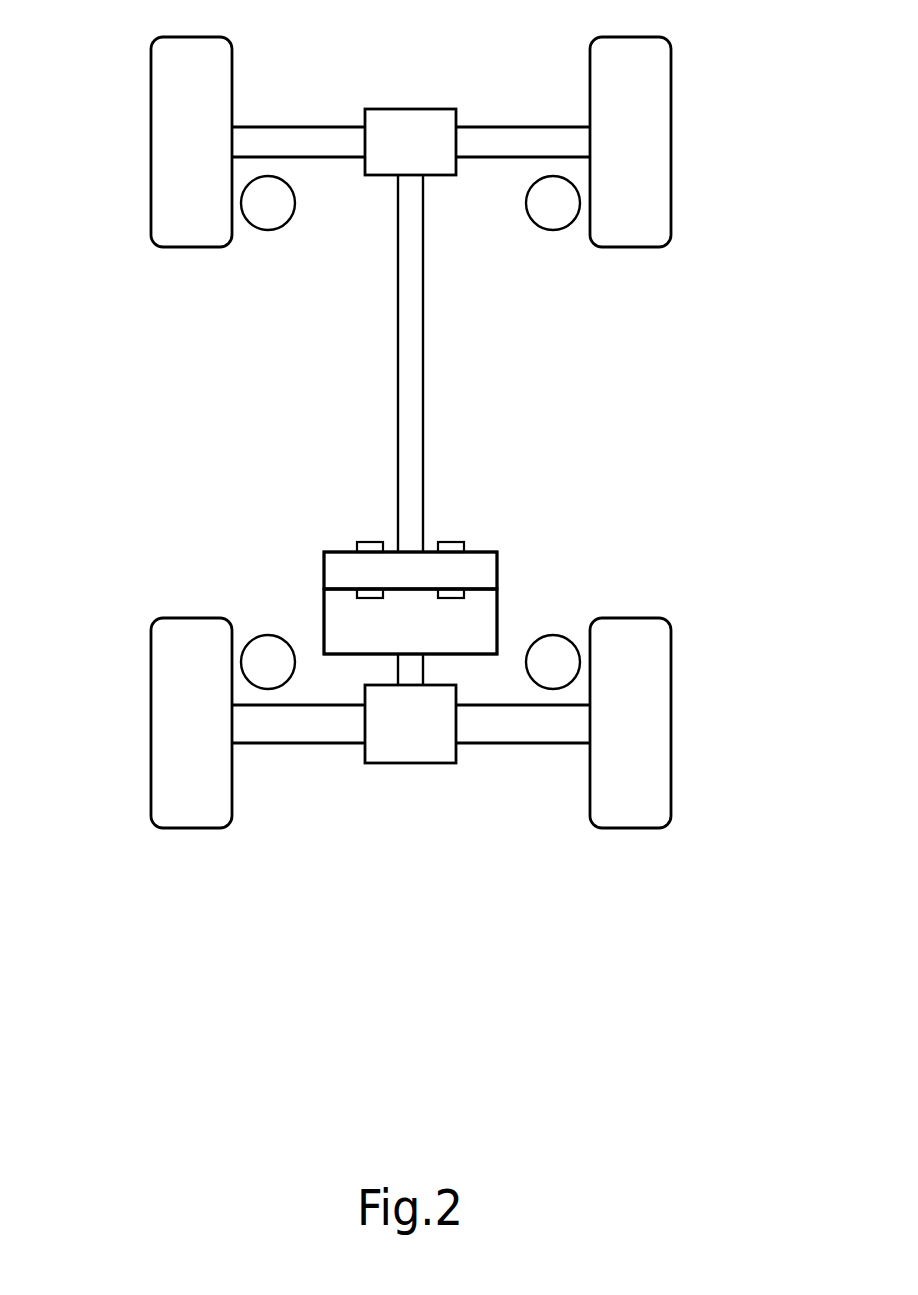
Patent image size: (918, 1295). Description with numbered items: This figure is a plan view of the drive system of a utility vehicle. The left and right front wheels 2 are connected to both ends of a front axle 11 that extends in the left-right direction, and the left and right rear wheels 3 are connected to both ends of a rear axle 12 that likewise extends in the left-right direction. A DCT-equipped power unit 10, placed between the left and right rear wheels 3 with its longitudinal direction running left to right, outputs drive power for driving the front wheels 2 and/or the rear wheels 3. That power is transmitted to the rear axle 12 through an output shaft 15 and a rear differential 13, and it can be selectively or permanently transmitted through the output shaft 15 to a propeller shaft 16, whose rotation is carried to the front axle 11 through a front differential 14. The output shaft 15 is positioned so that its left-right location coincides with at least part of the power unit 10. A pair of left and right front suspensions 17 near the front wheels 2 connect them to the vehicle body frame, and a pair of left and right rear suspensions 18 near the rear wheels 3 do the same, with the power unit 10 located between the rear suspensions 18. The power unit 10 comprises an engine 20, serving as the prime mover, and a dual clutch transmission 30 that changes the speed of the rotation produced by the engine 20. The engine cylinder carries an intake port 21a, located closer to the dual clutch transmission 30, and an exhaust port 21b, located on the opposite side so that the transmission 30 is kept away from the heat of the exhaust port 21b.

The front wheels 2 is at (155, 53).
The rear wheels 3 is at (157, 808).
The DCT-equipped power unit 10 is at (334, 546).
The front axle 11 is at (522, 127).
The rear axle 12 is at (532, 745).
The rear differential 13 is at (423, 768).
The front differential 14 is at (410, 113).
The output shaft 15 is at (398, 667).
The propeller shaft 16 is at (424, 434).
The front suspensions 17 is at (269, 231).
The rear suspensions 18 is at (268, 635).
The engine 20 is at (492, 564).
The intake port 21a is at (375, 541).
The exhaust port 21b is at (375, 598).
The dual clutch transmission 30 is at (330, 613).